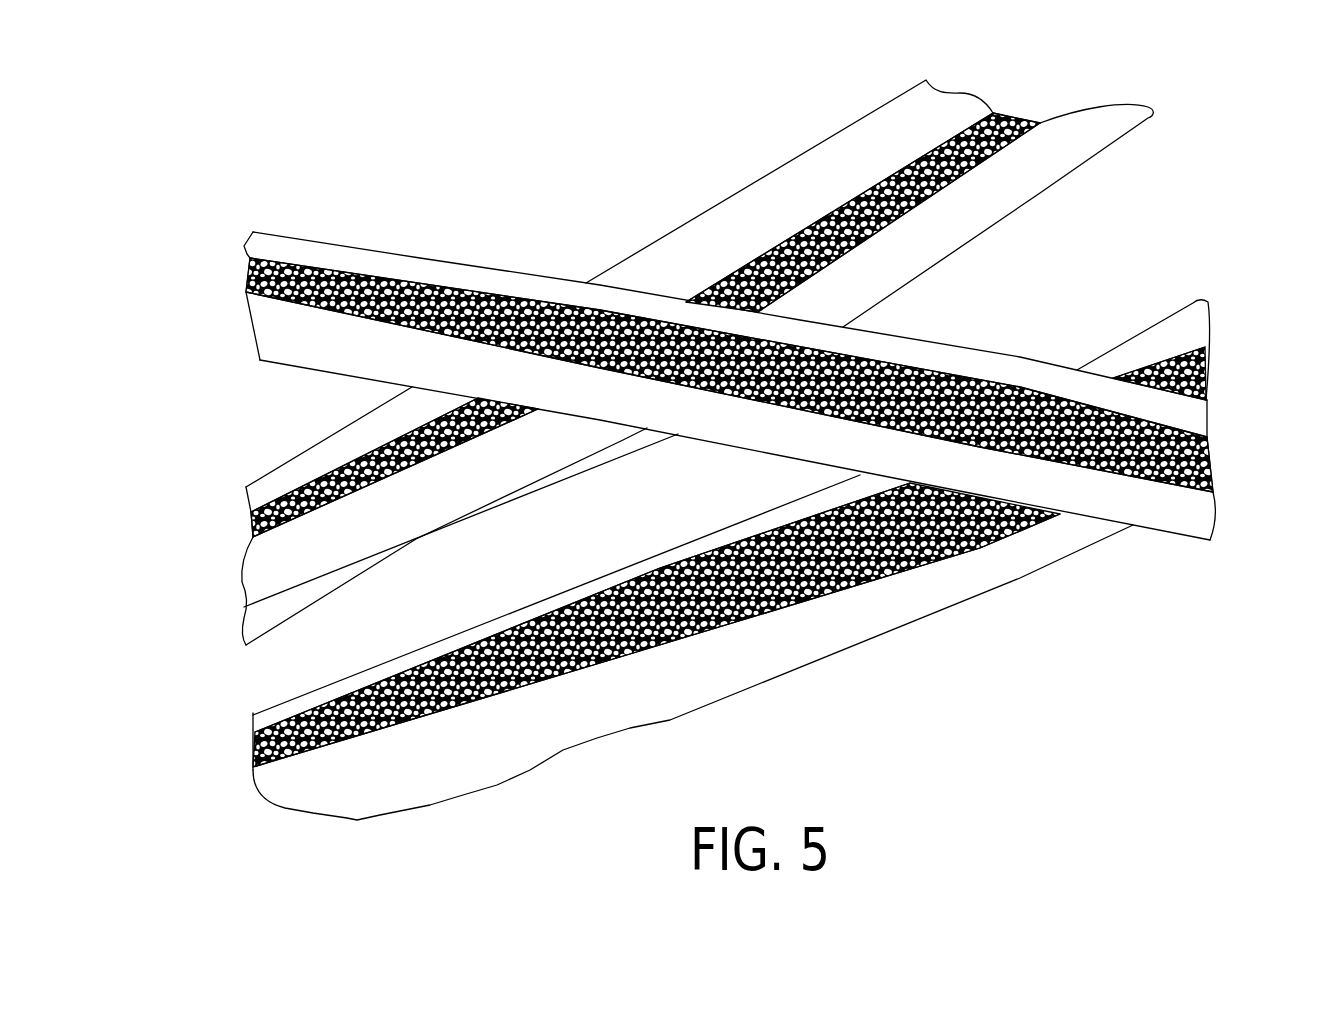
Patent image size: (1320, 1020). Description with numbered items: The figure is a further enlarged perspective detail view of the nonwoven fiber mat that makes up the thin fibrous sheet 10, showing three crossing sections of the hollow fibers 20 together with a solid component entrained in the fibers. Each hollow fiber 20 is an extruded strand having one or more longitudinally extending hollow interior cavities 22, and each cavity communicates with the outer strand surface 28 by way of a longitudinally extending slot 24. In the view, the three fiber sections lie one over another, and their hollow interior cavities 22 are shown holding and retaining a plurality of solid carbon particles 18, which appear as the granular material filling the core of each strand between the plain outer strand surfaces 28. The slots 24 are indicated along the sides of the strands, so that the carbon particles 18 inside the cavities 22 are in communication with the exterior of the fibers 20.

The fibrous sheet 10 is at (1171, 277).
The carbon particles 18 is at (1010, 112).
The hollow fiber 20 is at (1078, 132).
The hollow interior cavity 22 is at (262, 276).
The longitudinally extending slot 24 is at (952, 378).
The outer strand surface 28 is at (456, 265).